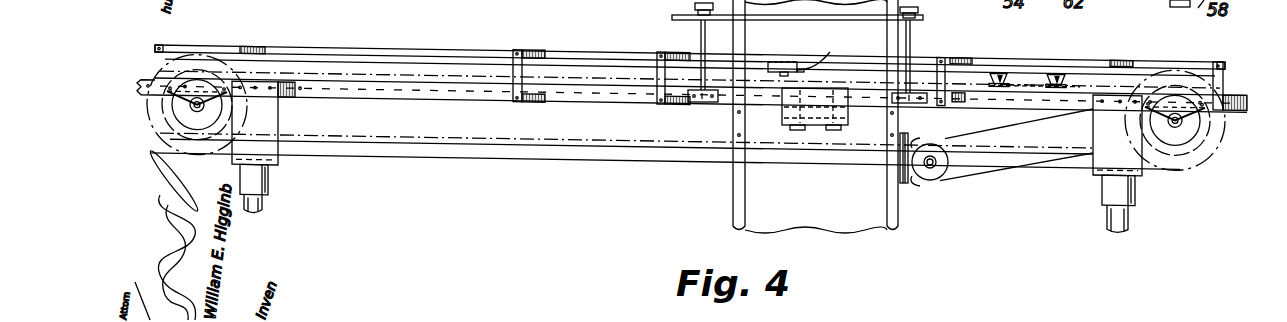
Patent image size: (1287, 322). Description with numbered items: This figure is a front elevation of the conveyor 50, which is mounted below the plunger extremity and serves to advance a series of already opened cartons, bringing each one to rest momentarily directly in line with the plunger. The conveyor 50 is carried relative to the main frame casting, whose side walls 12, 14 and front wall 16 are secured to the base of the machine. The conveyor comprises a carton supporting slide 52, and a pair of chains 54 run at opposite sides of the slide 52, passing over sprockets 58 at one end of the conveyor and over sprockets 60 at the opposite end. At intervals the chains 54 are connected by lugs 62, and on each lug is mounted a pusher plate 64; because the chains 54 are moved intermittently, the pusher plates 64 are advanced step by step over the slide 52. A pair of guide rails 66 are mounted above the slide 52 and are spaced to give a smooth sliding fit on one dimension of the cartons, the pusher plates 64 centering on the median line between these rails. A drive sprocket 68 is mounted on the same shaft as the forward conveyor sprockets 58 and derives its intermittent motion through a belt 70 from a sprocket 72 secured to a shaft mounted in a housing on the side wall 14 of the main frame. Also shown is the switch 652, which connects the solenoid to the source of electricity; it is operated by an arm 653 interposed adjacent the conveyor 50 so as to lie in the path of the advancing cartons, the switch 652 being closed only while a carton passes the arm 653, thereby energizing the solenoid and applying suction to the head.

The side wall 12 is at (735, 197).
The side wall 14 is at (898, 208).
The front wall 16 is at (830, 209).
The conveyor 50 is at (441, 47).
The carton supporting slide 52 is at (468, 83).
The chains 54 is at (1030, 88).
The sprockets 58 is at (1215, 135).
The sprockets 60 is at (165, 127).
The lugs 62 is at (999, 70).
The pusher plate 64 is at (1050, 71).
The guide rails 66 is at (593, 53).
The drive sprocket 68 is at (1200, 153).
The belt 70 is at (1003, 170).
The sprocket 72 is at (960, 173).
The switch 652 is at (789, 60).
The arm 653 is at (826, 60).